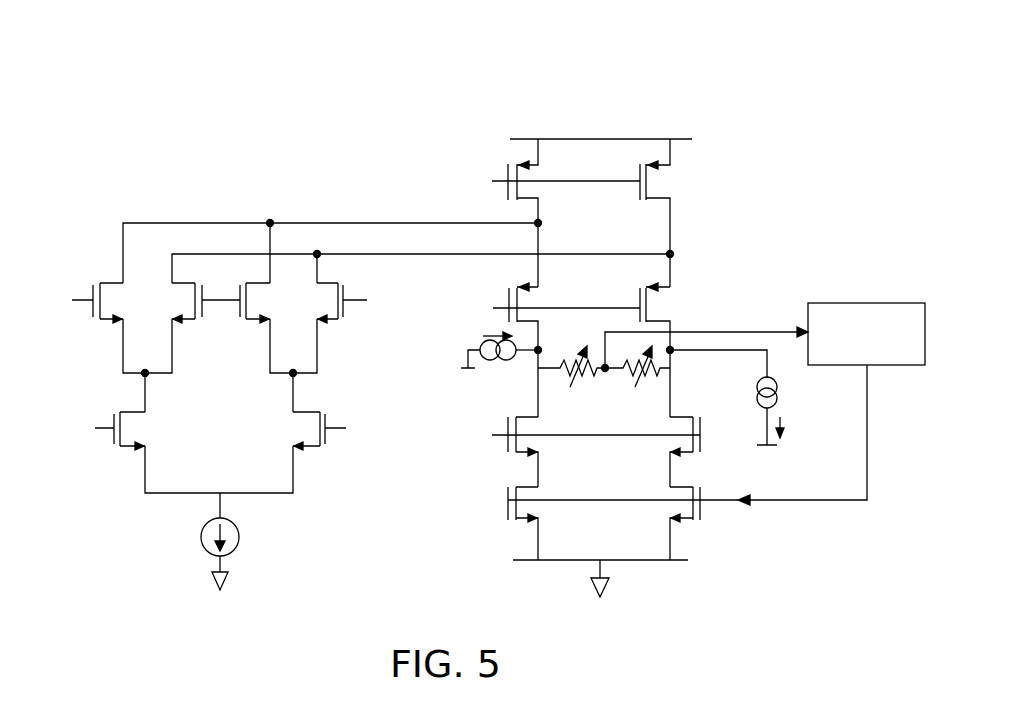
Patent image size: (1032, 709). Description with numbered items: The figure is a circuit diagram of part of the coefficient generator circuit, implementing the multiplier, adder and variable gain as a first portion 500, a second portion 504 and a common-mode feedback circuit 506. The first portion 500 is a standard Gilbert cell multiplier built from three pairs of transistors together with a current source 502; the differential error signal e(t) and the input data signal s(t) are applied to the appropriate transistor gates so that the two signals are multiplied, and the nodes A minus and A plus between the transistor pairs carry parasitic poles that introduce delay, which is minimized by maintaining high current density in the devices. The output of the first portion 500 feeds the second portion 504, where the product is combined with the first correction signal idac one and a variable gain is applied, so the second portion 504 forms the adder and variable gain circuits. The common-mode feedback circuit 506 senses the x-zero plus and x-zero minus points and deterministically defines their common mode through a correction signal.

The first portion 500 is at (192, 201).
The current source 502 is at (240, 538).
The second portion 504 is at (599, 104).
The common-mode feedback (CMFB) circuit 506 is at (866, 334).